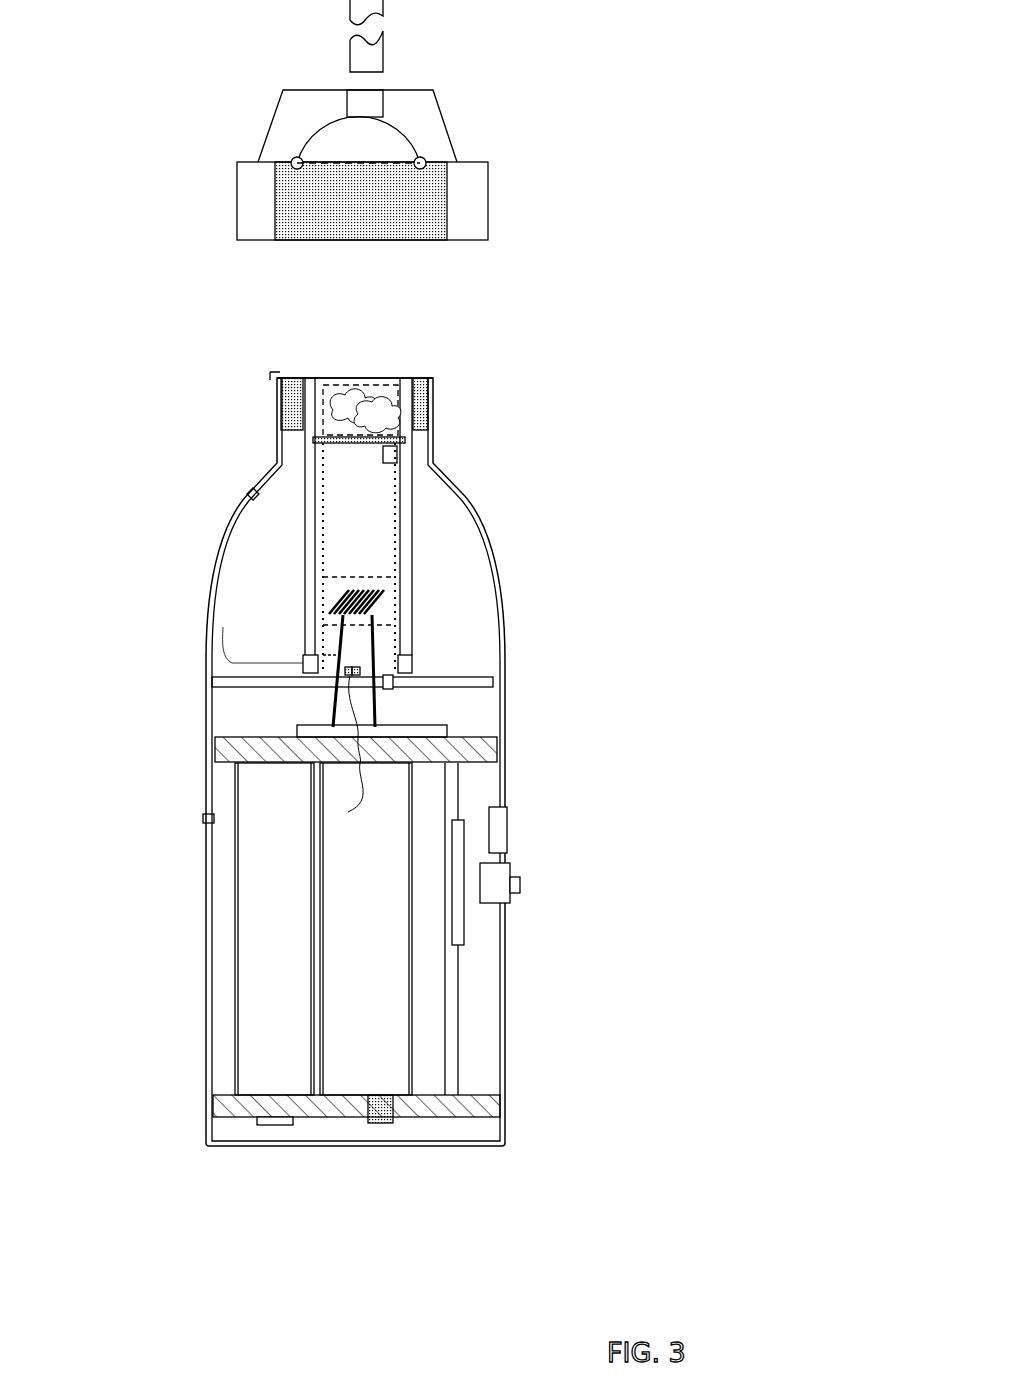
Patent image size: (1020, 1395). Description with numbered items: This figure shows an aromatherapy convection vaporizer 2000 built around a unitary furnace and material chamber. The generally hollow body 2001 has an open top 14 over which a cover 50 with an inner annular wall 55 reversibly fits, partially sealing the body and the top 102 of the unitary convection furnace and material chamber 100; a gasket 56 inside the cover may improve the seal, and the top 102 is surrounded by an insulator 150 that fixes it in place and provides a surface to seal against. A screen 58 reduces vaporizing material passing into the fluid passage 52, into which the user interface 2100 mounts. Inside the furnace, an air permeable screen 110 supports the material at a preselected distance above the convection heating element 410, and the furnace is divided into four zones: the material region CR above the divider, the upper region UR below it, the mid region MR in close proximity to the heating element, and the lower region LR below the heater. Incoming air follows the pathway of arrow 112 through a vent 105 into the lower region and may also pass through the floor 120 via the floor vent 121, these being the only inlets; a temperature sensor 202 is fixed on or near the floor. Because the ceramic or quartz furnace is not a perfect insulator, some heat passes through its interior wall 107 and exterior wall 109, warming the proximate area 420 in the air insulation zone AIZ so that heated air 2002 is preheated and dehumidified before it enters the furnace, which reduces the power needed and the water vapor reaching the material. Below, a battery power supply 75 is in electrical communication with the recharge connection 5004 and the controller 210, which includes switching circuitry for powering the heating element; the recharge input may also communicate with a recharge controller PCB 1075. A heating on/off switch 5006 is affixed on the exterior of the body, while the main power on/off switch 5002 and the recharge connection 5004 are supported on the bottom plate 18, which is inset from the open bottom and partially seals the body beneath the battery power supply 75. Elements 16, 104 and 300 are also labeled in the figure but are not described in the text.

The user interface 2100 is at (336, 50).
The cover 50 is at (389, 178).
The fluid passage 52 is at (385, 100).
The inner annular wall 55 is at (438, 203).
The gasket 56 is at (297, 170).
The screen 58 is at (363, 167).
The aromatherapy convection vaporizer 2000 is at (772, 288).
The body 2001 is at (210, 988).
The open top 14 is at (283, 370).
The sensors 16 is at (253, 497).
The insulator 150 is at (422, 403).
The unitary convection furnace and material chamber 100 is at (438, 478).
The vent 105 is at (303, 670).
The material region CR is at (332, 354).
The top of the unitary convection furnace and material chamber 102 is at (393, 373).
The air permeable screen 110 is at (352, 440).
The temperature sensor 202 is at (397, 456).
The upper region UR is at (397, 515).
The mid region MR is at (405, 610).
The lower region LR is at (397, 653).
The interior wall 107 is at (323, 520).
The convection heating element 410 is at (377, 583).
The air insulation zone AIZ is at (443, 551).
The exterior wall 109 is at (417, 590).
The tube bottom 104 is at (413, 668).
The floor 120 is at (478, 690).
The floor vent 121 is at (400, 693).
The controller 210 is at (447, 730).
The proximate area 420 is at (263, 590).
The heated air 2002 is at (245, 587).
The arrow pathway 112 is at (336, 664).
The battery power supply 75 is at (323, 929).
The recharge controller 1075 is at (465, 935).
The controller 300 is at (508, 822).
The heating on/off switch 5006 is at (495, 898).
The bottom plate 18 is at (475, 1120).
The recharge connection 5004 is at (380, 1117).
The main power on/off switch 5002 is at (273, 1125).